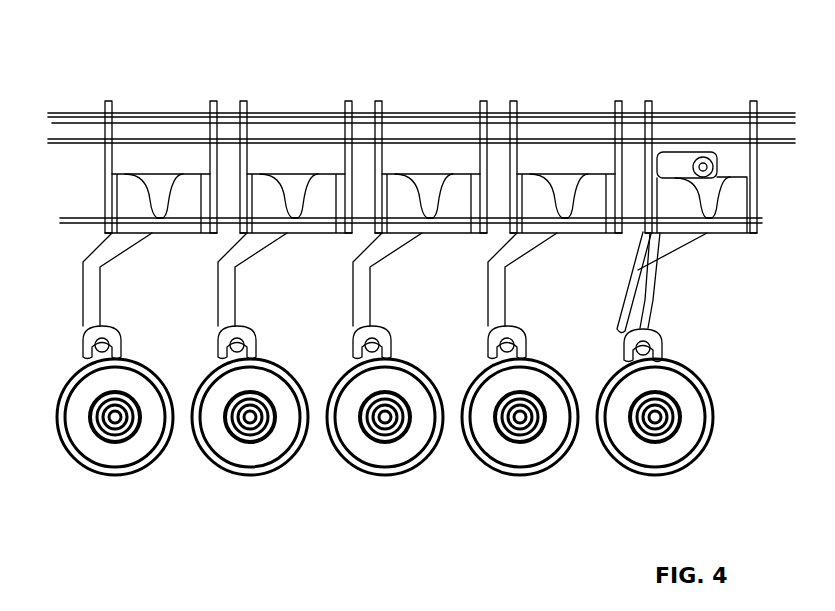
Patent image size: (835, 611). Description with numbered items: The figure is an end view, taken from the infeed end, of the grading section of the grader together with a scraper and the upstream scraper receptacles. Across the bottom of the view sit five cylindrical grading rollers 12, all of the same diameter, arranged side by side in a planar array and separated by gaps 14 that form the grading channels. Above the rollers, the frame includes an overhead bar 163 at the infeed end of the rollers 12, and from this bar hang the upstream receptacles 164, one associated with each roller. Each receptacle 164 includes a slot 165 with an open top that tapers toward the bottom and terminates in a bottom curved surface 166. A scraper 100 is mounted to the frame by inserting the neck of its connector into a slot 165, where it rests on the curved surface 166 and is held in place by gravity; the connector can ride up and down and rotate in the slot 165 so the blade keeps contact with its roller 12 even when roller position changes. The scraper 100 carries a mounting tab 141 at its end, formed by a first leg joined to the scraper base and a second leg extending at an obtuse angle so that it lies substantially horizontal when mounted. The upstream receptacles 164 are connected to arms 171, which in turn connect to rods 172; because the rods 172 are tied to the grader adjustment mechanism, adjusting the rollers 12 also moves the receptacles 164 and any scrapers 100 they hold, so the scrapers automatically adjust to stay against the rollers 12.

The grading roller 12 is at (150, 468).
The gap 14 is at (184, 427).
The scraper 100 is at (625, 283).
The mounting tab 141 is at (665, 163).
The overhead bar 163 is at (83, 132).
The upstream receptacle 164 is at (108, 183).
The slot 165 is at (160, 192).
The bottom curved surface 166 is at (170, 219).
The arm 171 is at (208, 292).
The rod 172 is at (87, 344).